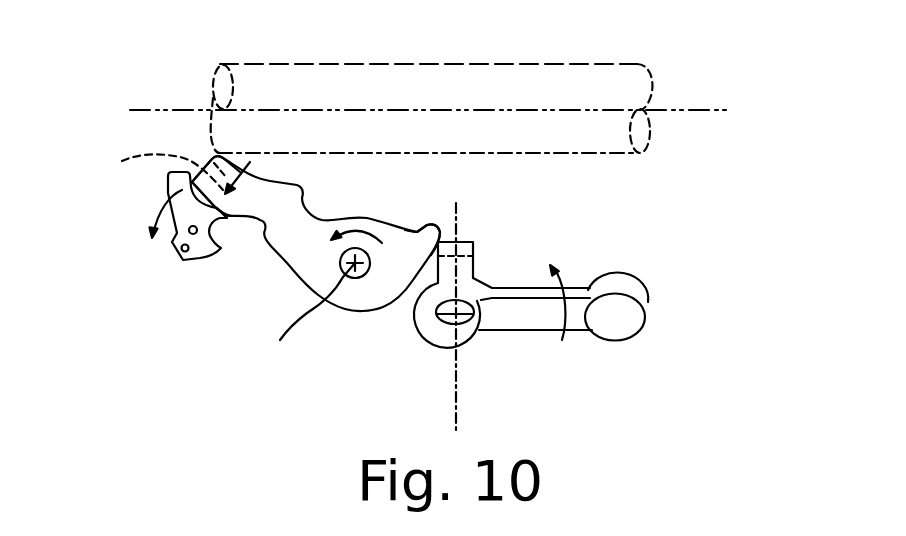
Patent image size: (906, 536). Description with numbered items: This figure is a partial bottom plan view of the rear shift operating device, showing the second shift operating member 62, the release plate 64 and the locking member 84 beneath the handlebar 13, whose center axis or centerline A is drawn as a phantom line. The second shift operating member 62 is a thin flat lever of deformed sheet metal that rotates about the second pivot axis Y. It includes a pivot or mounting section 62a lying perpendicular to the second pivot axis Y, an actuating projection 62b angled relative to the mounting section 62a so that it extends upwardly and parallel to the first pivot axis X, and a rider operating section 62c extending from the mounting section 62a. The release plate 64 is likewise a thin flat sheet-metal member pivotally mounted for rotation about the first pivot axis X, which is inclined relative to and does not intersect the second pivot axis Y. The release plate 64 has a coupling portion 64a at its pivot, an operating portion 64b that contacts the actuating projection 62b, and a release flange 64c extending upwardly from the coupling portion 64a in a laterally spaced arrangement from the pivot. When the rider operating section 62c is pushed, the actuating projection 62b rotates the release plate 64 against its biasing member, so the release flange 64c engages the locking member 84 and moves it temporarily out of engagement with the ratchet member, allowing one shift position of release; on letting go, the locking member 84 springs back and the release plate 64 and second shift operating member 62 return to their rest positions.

The handlebar 13 is at (581, 63).
The center axis A is at (703, 109).
The second shift operating member 62 is at (622, 276).
The mounting section 62a is at (470, 330).
The actuating projection 62b is at (475, 245).
The rider operating section 62c is at (573, 320).
The release plate 64 is at (269, 257).
The coupling portion 64a is at (358, 295).
The operating portion 64b is at (423, 238).
The release flange 64c is at (164, 180).
The locking member 84 is at (168, 249).
The first pivot axis X is at (309, 319).
The second pivot axis Y is at (455, 318).